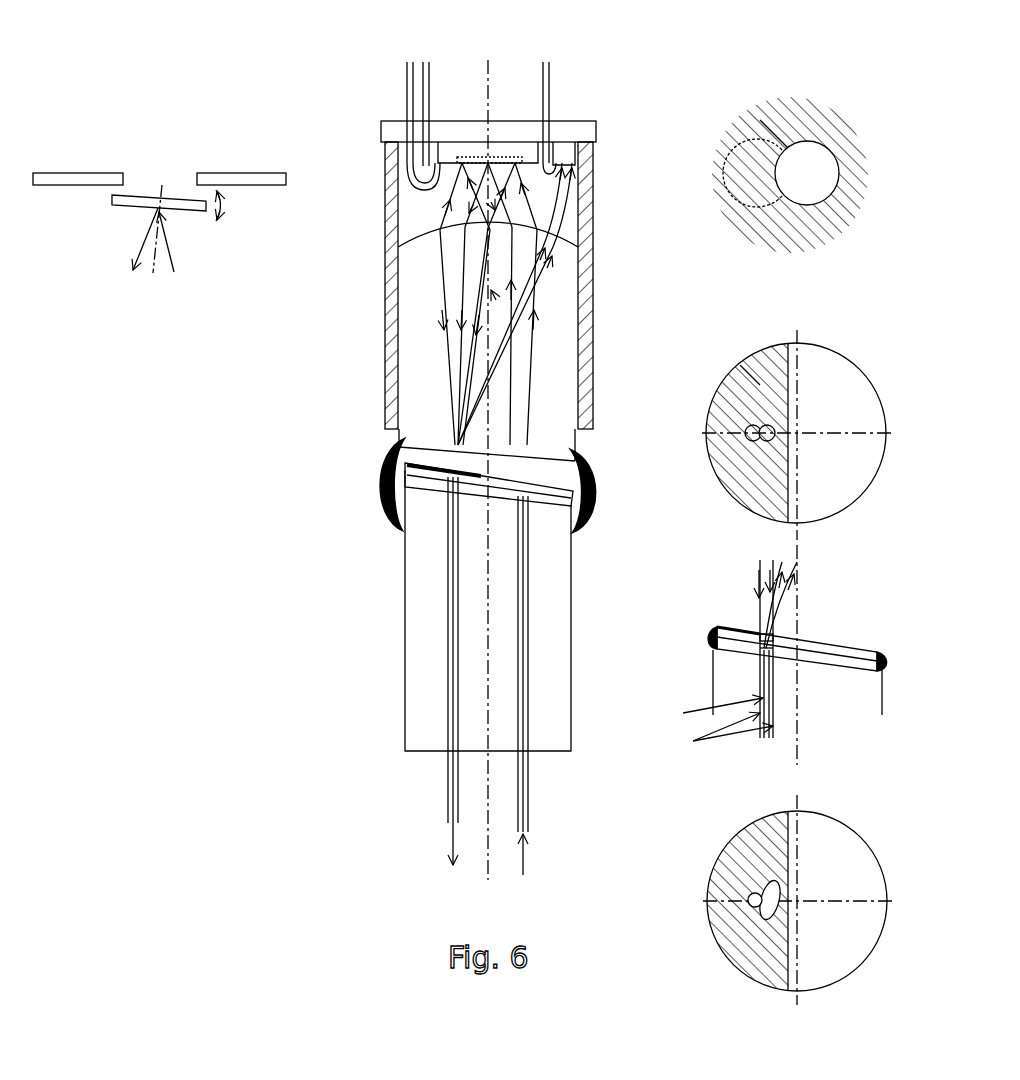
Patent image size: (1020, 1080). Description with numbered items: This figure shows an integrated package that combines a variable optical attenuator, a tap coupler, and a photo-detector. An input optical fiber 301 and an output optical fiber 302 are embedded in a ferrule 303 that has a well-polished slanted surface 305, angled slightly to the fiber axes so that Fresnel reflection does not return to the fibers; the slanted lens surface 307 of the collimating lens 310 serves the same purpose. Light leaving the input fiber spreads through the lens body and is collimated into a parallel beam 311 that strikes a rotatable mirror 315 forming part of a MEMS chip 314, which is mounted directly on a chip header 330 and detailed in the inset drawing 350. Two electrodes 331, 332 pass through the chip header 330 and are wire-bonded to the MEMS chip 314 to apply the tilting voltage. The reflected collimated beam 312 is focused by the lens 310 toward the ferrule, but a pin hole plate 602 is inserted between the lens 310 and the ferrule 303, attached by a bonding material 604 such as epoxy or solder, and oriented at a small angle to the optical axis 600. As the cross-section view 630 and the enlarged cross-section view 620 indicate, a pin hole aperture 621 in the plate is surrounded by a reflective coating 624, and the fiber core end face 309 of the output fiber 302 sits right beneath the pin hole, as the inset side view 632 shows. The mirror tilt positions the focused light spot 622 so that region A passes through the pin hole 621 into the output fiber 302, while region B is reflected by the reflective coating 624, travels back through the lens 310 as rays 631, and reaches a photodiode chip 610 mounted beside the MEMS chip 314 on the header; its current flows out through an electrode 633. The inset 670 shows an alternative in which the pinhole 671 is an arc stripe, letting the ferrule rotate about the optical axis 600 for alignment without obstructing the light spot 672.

The input optical fiber 301 is at (530, 807).
The output optical fiber 302 is at (449, 792).
The ferrule 303 is at (403, 613).
The slanted surface 305 is at (419, 487).
The slanted lens surface 307 is at (412, 448).
The fiber core end face 309 is at (444, 478).
The collimating lens 310 is at (557, 352).
The collimated parallel beam 311 is at (532, 203).
The reflected collimated beam 312 is at (449, 203).
The MEMS chip 314 is at (452, 156).
The rotatable mirror 315 is at (496, 158).
The chip header 330 is at (574, 128).
The first electrode 331 is at (408, 86).
The second electrode 332 is at (430, 86).
The inset drawing of MEMS chip 350 is at (167, 148).
The optical axis 600 is at (490, 584).
The pin hole plate 602 is at (549, 483).
The bonding material 604 is at (384, 494).
The photodiode chip 610 is at (564, 153).
The enlarged cross-section view 620 is at (818, 46).
The pin hole aperture 621 is at (829, 160).
The focused light spot 622 is at (746, 158).
The reflective coating 624 is at (797, 88).
The cross-section view 630 is at (857, 327).
The reflected rays 631 is at (547, 257).
The inset side view 632 is at (736, 568).
The electrode 633 is at (551, 86).
The inset of arc-stripe pinhole 670 is at (857, 795).
The arc stripe pinhole 671 is at (770, 886).
The light spot 672 is at (752, 893).